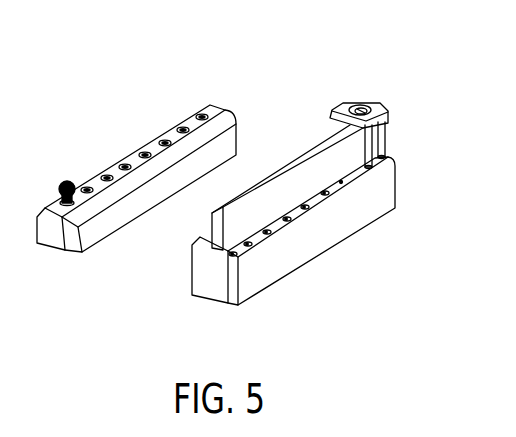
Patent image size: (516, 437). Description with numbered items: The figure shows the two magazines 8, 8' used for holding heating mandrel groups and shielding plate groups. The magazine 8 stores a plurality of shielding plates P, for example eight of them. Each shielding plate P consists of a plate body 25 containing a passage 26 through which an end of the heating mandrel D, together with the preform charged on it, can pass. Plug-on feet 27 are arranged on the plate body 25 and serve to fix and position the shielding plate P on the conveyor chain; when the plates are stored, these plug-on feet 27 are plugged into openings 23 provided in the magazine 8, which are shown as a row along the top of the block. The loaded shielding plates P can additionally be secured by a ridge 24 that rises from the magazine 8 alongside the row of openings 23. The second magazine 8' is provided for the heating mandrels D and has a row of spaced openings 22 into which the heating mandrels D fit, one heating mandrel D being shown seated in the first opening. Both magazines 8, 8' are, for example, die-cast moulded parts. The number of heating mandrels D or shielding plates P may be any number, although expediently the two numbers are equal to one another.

The magazine 8 is at (290, 261).
The magazine 8' is at (130, 206).
The openings 22 is at (105, 180).
The openings 23 is at (288, 220).
The ridge 24 is at (283, 185).
The plate body 25 is at (337, 112).
The passage 26 is at (362, 107).
The plug-on feet 27 is at (387, 138).
The heating mandrel D is at (63, 177).
The shielding plate P is at (380, 107).